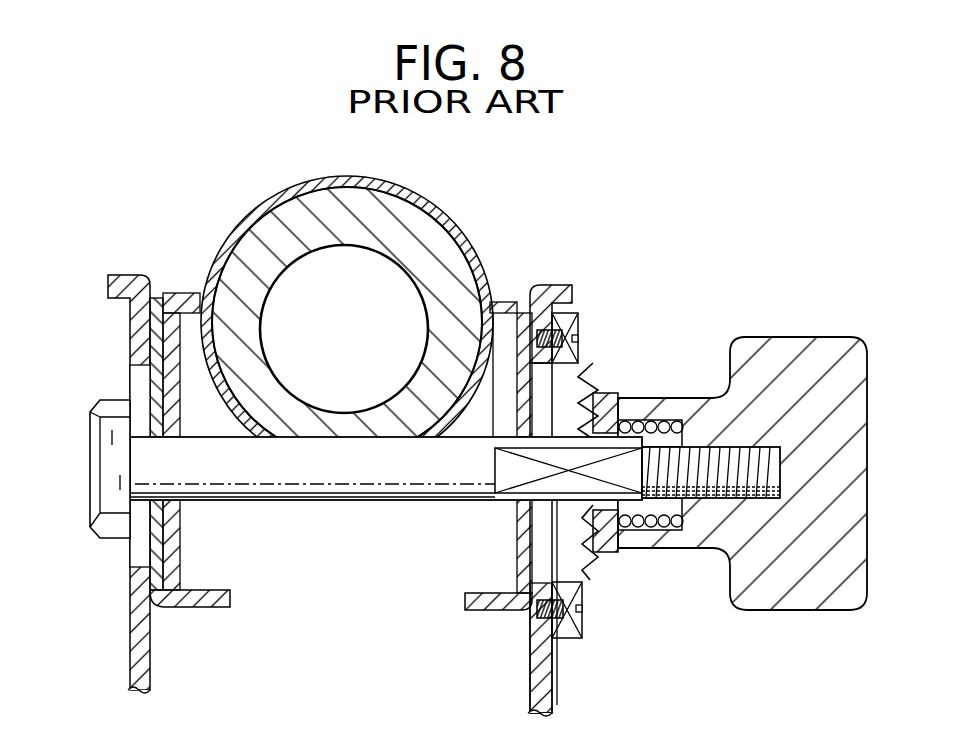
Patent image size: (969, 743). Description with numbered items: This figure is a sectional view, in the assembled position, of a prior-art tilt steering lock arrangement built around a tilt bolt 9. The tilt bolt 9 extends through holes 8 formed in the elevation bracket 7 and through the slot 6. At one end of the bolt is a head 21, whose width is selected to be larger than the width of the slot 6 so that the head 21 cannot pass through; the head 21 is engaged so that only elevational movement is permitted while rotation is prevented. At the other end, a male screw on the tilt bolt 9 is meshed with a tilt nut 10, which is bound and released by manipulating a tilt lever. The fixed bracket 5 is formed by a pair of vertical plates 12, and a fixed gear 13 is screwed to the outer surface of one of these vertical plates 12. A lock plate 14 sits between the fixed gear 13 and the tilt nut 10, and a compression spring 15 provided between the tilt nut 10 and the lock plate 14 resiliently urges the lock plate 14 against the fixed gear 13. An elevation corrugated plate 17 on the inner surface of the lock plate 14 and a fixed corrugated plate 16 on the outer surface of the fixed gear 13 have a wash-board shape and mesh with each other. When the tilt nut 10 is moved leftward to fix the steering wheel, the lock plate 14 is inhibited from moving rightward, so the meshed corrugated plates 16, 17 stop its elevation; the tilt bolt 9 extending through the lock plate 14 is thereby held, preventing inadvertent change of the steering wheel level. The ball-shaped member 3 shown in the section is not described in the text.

The ball 3 is at (257, 240).
The fixed bracket 5 is at (547, 290).
The slot 6 is at (133, 382).
The elevation bracket 7 is at (187, 293).
The holes 8 is at (180, 497).
The tilt bolt 9 is at (367, 487).
The tilt nut 10 is at (772, 343).
The vertical plates 12 is at (180, 568).
The fixed gear 13 is at (528, 538).
The lock plate 14 is at (618, 553).
The compression spring 15 is at (673, 535).
The fixed corrugated plate 16 is at (594, 582).
The elevation corrugated plate 17 is at (610, 393).
The head 21 is at (93, 495).